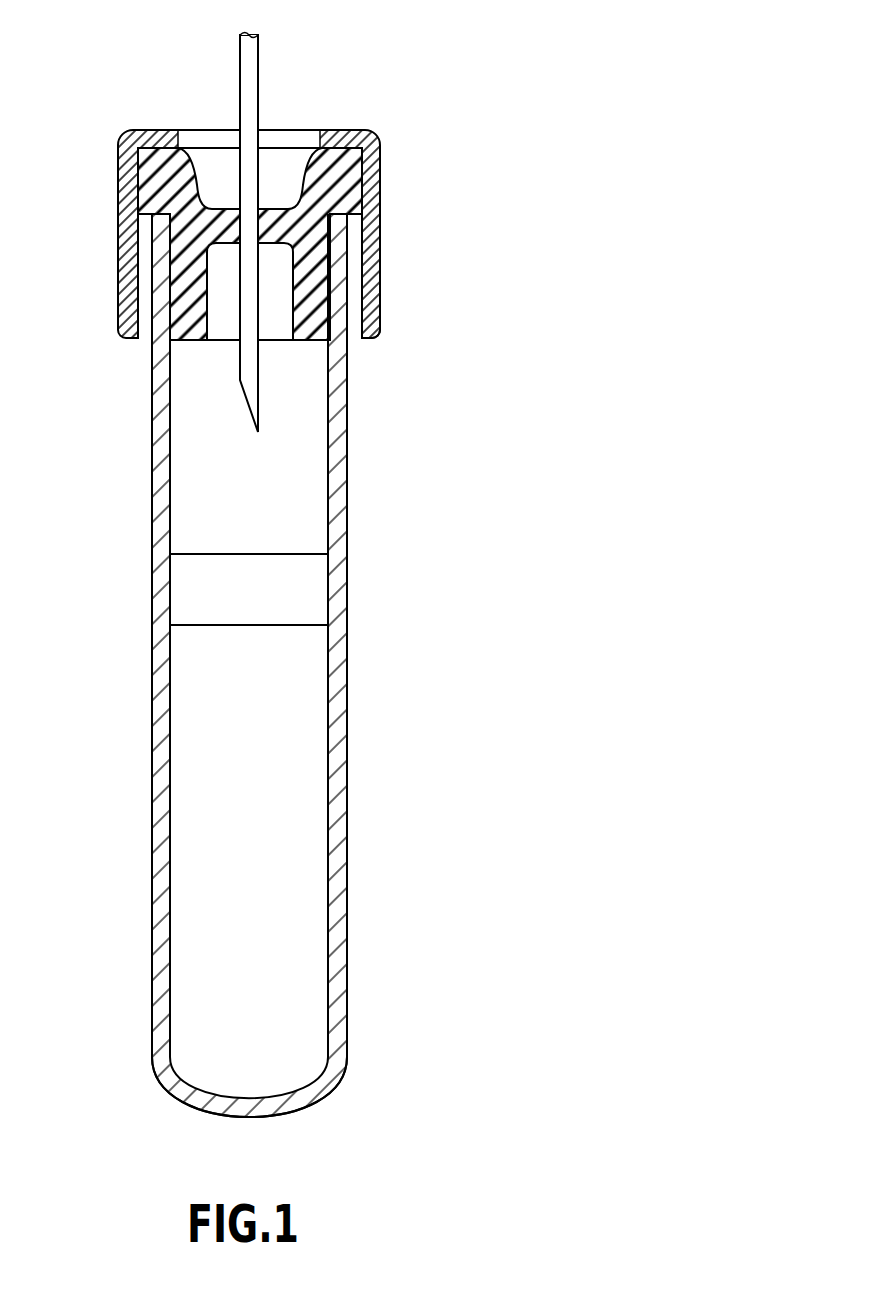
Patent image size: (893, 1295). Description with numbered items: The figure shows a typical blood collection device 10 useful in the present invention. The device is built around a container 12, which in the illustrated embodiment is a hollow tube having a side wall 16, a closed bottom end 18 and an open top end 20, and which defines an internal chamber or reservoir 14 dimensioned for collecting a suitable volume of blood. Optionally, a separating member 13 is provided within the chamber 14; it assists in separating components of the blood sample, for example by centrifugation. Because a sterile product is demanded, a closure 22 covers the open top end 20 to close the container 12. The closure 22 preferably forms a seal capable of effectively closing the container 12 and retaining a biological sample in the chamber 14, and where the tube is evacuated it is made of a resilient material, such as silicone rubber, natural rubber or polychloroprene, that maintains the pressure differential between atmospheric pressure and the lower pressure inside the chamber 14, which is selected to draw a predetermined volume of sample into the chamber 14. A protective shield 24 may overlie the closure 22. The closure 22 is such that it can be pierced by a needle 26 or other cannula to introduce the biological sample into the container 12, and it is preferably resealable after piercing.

The blood collection device 10 is at (522, 52).
The container 12 is at (289, 696).
The separating member 13 is at (285, 587).
The internal chamber 14 is at (300, 498).
The side wall 16 is at (348, 693).
The closed bottom end 18 is at (238, 1117).
The open top end 20 is at (287, 234).
The closure 22 is at (175, 258).
The protective shield 24 is at (380, 287).
The needle 26 is at (240, 80).